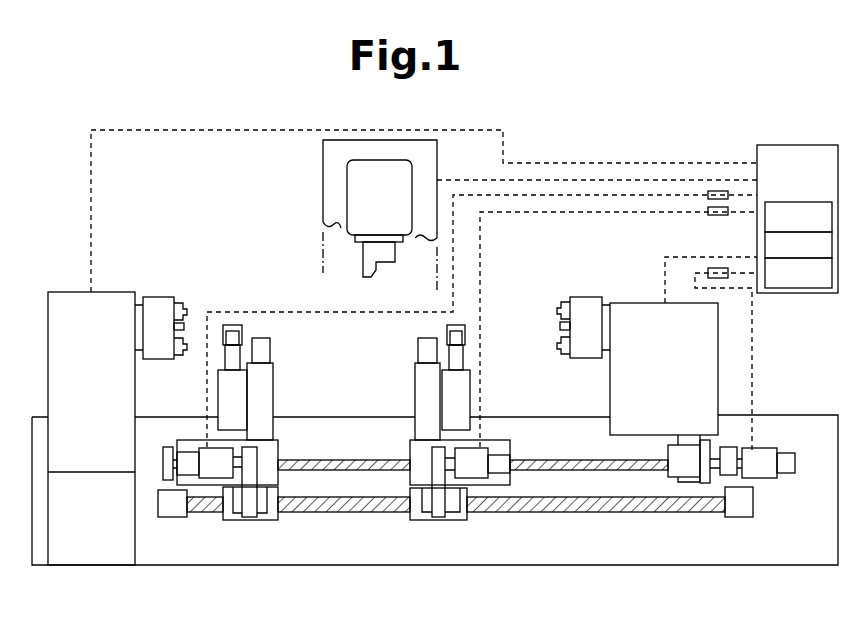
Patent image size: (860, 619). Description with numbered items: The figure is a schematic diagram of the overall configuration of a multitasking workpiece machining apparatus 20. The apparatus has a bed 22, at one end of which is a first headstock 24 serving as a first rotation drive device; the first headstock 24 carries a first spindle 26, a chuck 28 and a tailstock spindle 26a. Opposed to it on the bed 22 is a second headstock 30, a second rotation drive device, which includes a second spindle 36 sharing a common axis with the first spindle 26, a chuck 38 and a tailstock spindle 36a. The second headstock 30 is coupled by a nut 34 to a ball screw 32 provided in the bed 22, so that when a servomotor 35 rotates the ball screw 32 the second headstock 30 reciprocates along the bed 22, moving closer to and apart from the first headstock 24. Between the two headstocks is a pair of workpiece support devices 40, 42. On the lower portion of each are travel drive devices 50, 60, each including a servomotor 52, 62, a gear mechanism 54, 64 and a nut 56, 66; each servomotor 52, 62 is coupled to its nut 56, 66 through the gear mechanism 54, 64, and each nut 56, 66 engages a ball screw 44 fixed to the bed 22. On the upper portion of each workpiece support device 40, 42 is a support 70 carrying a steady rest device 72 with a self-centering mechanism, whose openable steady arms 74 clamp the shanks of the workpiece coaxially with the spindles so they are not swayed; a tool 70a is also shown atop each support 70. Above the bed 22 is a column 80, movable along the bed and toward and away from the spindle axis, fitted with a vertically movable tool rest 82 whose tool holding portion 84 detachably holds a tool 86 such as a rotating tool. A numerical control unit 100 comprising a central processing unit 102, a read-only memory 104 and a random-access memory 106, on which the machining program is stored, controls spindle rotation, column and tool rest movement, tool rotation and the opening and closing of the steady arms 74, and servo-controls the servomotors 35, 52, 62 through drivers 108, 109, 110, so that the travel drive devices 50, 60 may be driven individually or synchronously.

The multitasking workpiece machining apparatus 20 is at (81, 214).
The bed 22 is at (808, 415).
The first headstock 24 is at (68, 292).
The first spindle 26 is at (140, 296).
The tailstock spindle 26a is at (184, 327).
The chuck 28 is at (163, 302).
The second headstock 30 is at (634, 303).
The ball screw 32 is at (575, 460).
The nut 34 is at (668, 452).
The servomotor 35 is at (765, 447).
The second spindle 36 is at (602, 297).
The tailstock spindle 36a is at (567, 325).
The chuck 38 is at (575, 297).
The workpiece support device 40 is at (286, 358).
The workpiece support device 42 is at (397, 362).
The ball screw 44 is at (598, 512).
The travel drive device 50 is at (275, 456).
The servomotor 52 is at (204, 450).
The gear mechanism 54 is at (255, 470).
The nut 56 is at (262, 508).
The travel drive device 60 is at (504, 439).
The servomotor 62 is at (490, 478).
The gear mechanism 64 is at (433, 468).
The nut 66 is at (447, 508).
The support 70 is at (273, 398).
The cutting tool 70a is at (270, 345).
The steady rest device 72 is at (218, 405).
The steady arms 74 is at (230, 356).
The column 80 is at (323, 192).
The tool rest 82 is at (352, 176).
The tool holding portion 84 is at (358, 243).
The tool 86 is at (388, 258).
The numerical control unit 100 is at (778, 145).
The central processing unit 102 is at (765, 220).
The read-only memory 104 is at (765, 245).
The random-access memory 106 is at (770, 288).
The driver 108 is at (716, 191).
The driver 109 is at (708, 215).
The driver 110 is at (708, 270).